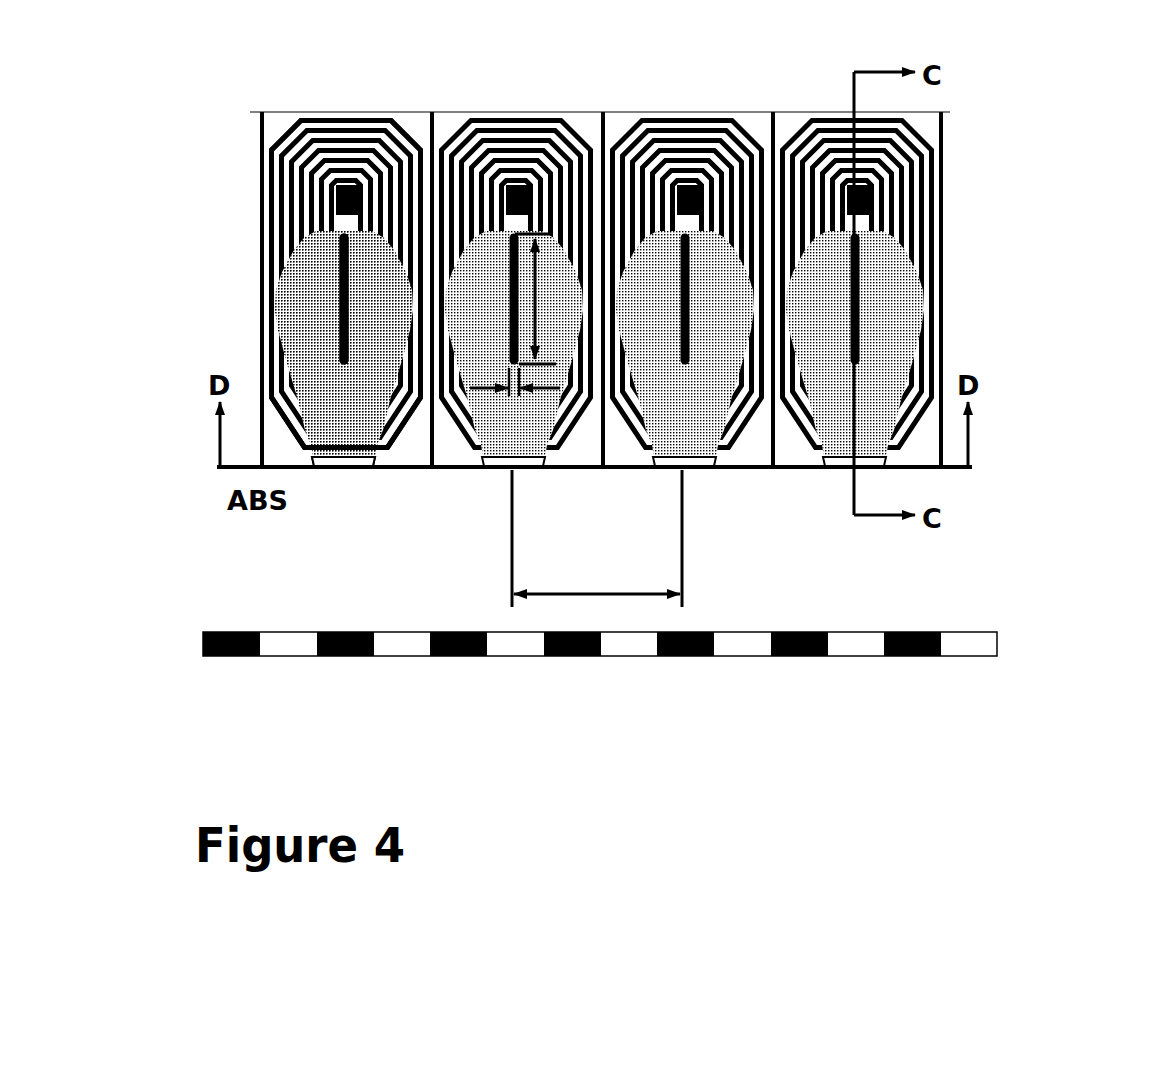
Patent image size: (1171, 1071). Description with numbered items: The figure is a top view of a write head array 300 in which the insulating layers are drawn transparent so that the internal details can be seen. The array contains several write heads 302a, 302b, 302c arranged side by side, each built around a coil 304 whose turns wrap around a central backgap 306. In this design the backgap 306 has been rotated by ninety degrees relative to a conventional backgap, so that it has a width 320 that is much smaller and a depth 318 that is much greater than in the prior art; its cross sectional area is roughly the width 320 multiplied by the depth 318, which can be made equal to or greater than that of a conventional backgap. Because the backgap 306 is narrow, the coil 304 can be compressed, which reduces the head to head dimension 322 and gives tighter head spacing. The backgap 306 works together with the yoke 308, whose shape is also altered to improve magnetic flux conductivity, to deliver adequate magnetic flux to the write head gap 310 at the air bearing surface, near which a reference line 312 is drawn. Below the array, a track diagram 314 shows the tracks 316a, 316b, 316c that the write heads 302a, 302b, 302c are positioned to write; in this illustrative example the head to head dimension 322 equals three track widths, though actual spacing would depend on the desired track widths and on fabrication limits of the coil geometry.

The write head array 300 is at (997, 145).
The write head 302a is at (356, 114).
The write head 302b is at (526, 112).
The write head 302c is at (692, 112).
The coil 304 is at (274, 197).
The backgap 306 is at (345, 322).
The yoke 308 is at (337, 423).
The write head gap 310 is at (338, 469).
The air bearing surface line 312 is at (748, 470).
The track diagram 314 is at (978, 660).
The track 316a is at (341, 656).
The track 316b is at (507, 646).
The track 316c is at (680, 650).
The depth 318 is at (540, 320).
The width 320 is at (511, 394).
The head to head dimension 322 is at (597, 550).